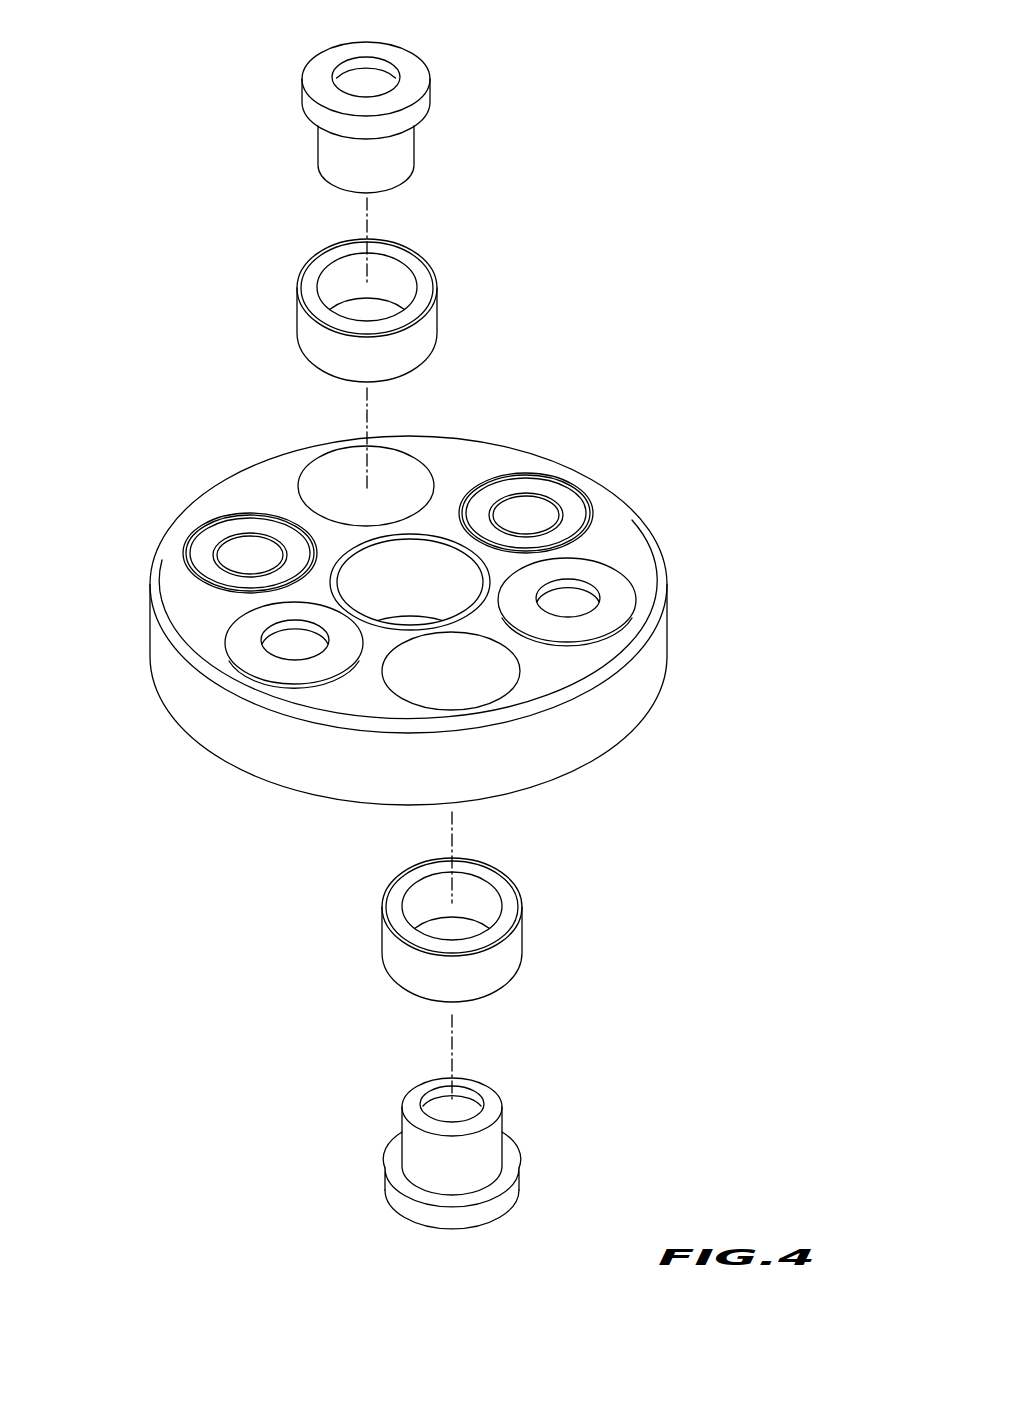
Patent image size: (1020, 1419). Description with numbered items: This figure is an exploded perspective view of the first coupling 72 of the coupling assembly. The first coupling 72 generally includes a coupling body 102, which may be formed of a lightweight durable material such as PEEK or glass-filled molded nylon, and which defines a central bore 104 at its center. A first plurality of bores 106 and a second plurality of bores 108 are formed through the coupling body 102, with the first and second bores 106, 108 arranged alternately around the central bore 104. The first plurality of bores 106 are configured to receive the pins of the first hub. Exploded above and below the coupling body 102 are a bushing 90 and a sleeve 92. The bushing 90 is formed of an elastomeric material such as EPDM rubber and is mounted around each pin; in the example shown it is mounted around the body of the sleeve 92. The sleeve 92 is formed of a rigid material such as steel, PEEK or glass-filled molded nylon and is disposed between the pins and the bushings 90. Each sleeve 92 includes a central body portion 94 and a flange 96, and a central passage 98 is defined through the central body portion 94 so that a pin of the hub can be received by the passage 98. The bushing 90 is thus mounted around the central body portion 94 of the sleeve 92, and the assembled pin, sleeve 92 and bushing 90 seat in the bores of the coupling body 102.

The first coupling 72 is at (148, 219).
The bushing 90 is at (305, 325).
The sleeve 92 is at (403, 153).
The central body portion 94 is at (327, 145).
The flange 96 is at (415, 77).
The central passage 98 is at (372, 83).
The coupling body 102 is at (220, 728).
The central bore 104 is at (400, 585).
The first plurality of bores 106 is at (595, 513).
The second plurality of bores 108 is at (330, 493).